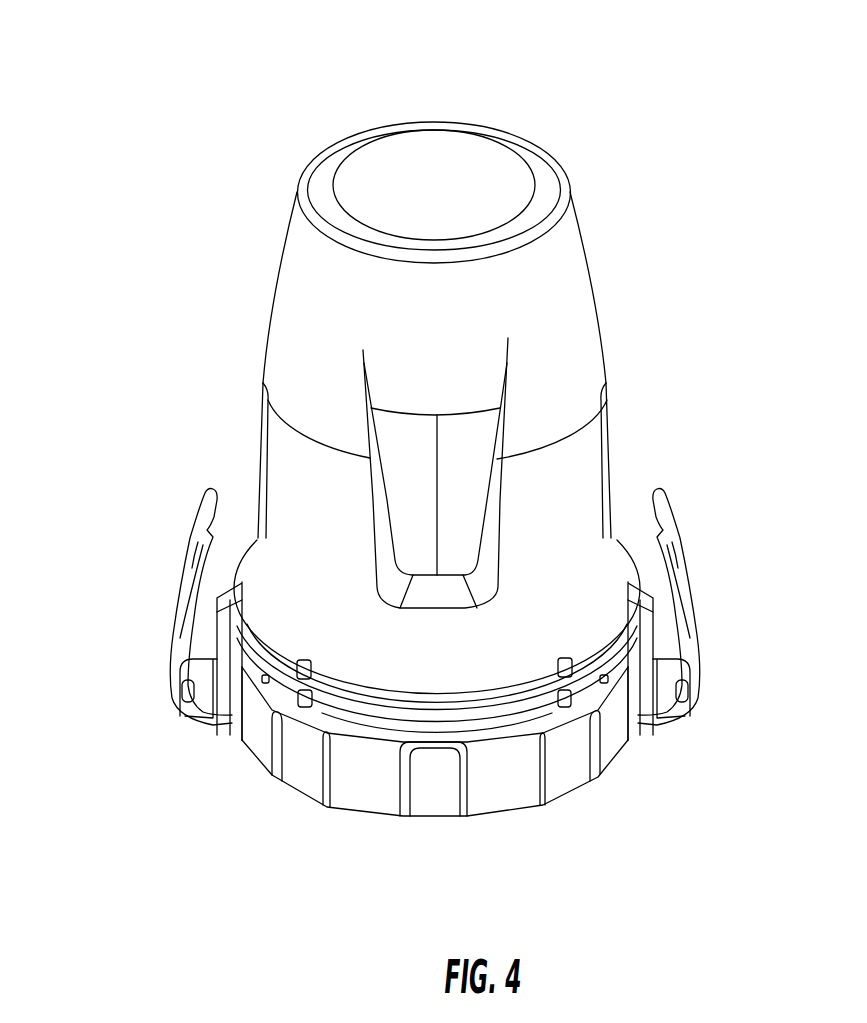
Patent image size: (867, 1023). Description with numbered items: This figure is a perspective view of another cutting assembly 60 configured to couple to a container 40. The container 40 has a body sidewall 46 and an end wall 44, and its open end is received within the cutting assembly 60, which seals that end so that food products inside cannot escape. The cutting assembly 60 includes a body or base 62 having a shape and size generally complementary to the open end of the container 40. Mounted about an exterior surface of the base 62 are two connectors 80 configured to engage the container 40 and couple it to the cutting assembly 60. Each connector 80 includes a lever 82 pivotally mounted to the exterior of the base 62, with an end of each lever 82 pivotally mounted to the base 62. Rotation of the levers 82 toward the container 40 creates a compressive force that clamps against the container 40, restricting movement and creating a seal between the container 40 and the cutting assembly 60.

The container 40 is at (190, 125).
The end wall 44 is at (470, 163).
The body sidewall 46 is at (292, 335).
The cutting assembly 60 is at (330, 845).
The base 62 is at (523, 782).
The connector 80 is at (130, 588).
The lever 82 is at (173, 633).